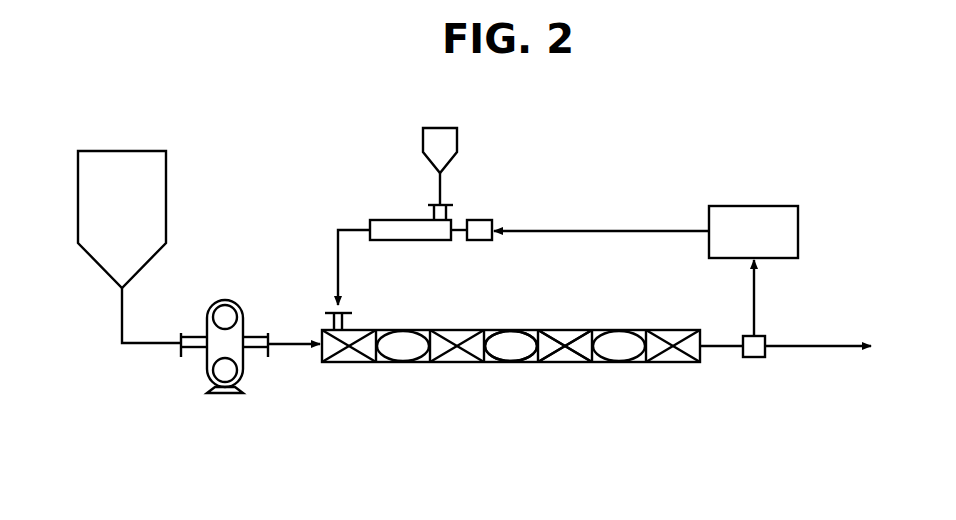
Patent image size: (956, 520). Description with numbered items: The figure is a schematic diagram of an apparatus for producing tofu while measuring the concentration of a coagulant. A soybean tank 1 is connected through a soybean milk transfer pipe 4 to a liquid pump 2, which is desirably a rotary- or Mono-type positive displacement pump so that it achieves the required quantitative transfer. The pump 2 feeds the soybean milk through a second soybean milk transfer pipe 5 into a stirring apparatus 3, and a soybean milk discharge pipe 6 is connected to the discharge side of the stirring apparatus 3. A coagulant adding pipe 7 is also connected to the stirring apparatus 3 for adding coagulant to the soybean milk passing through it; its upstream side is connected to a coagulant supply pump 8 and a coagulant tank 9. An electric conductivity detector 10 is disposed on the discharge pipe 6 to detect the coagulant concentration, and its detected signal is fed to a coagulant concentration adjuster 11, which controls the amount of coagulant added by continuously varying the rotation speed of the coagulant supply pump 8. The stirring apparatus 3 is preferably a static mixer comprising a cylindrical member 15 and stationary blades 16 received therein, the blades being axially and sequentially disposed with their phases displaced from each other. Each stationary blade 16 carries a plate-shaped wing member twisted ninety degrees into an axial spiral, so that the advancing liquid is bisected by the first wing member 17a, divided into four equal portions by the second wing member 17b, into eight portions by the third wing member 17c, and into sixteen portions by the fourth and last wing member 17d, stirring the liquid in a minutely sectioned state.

The soybean tank 1 is at (166, 217).
The liquid pump 2 is at (225, 393).
The stirring apparatus 3 is at (456, 364).
The soybean milk transfer pipe 4 is at (148, 344).
The soybean milk transfer pipe 5 is at (277, 345).
The soybean milk discharge pipe 6 is at (803, 346).
The coagulant adding pipe 7 is at (336, 264).
The coagulant supply pump 8 is at (411, 240).
The coagulant tank 9 is at (457, 143).
The electric conductivity detector 10 is at (754, 357).
The coagulant concentration adjuster 11 is at (757, 206).
The cylindrical member 15 is at (557, 330).
The stationary blade 16 is at (555, 364).
The first wing member 17a is at (356, 362).
The second wing member 17b is at (459, 330).
The third wing member 17c is at (582, 330).
The fourth wing member 17d is at (687, 362).